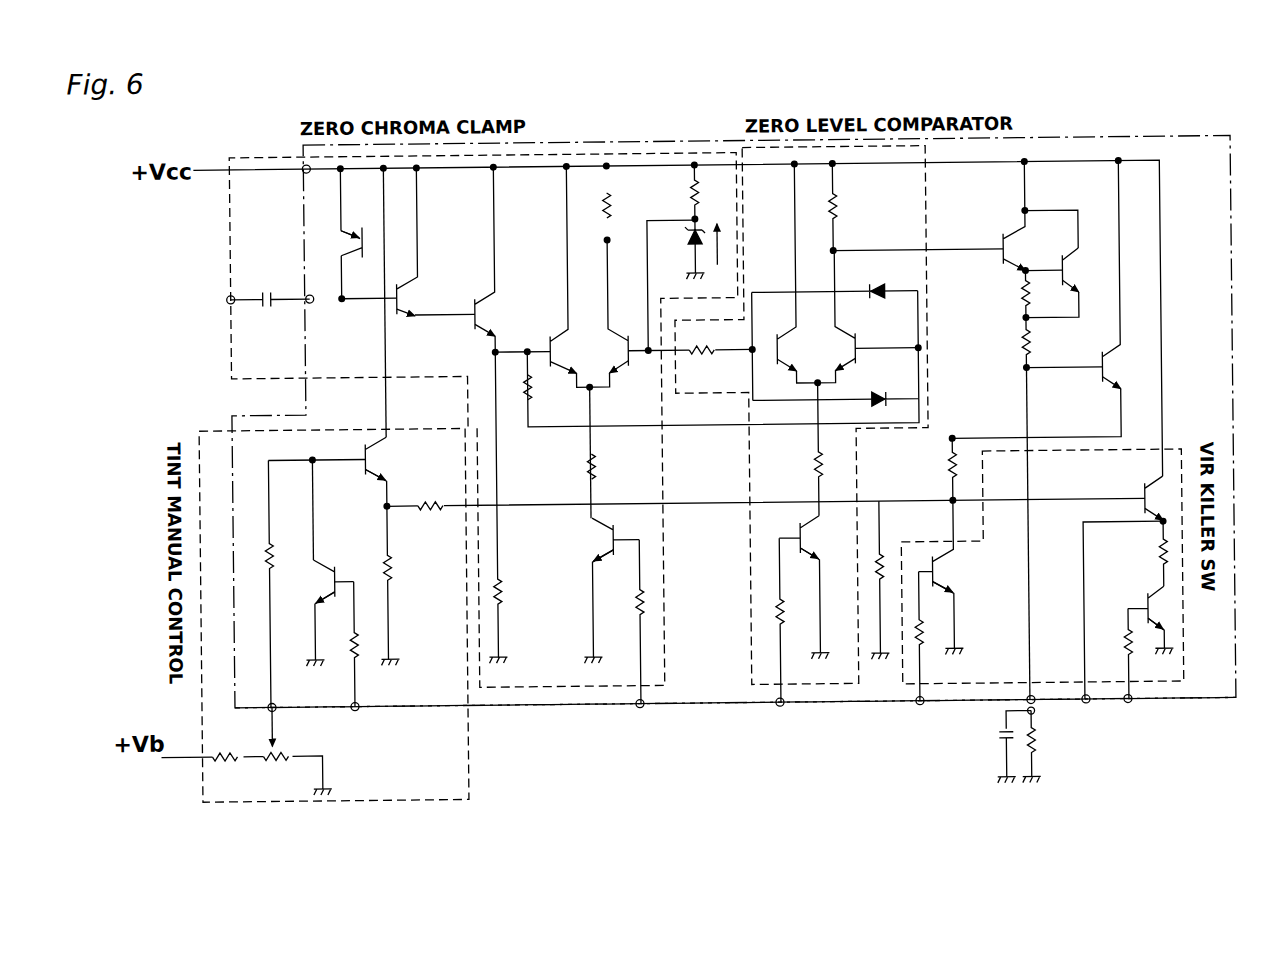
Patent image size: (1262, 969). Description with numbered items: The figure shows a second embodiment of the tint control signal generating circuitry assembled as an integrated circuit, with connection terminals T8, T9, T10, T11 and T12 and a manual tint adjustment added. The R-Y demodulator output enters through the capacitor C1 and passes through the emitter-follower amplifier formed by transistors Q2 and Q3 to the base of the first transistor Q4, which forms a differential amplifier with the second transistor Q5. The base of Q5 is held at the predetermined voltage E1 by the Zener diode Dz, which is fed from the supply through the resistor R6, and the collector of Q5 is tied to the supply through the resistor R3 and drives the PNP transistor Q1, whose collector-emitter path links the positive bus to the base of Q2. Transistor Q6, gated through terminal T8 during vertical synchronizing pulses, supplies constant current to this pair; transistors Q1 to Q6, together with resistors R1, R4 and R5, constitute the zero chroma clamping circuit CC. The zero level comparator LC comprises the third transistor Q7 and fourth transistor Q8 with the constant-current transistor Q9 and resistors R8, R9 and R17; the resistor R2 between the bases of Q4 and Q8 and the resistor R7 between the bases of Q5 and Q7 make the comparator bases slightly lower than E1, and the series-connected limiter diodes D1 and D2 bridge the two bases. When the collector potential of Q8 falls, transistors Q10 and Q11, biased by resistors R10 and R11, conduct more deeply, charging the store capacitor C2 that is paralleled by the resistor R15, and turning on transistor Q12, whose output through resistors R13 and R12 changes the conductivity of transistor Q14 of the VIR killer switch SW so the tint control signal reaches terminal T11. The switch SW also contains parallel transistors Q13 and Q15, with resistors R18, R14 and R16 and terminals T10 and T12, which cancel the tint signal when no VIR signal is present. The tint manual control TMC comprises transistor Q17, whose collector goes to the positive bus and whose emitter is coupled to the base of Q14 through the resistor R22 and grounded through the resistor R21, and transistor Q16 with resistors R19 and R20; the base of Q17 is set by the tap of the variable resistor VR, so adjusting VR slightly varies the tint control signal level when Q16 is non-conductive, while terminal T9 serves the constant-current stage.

The PNP type transistor Q1 is at (358, 242).
The transistor Q2 is at (417, 242).
The transistor Q3 is at (497, 251).
The first transistor Q4 is at (569, 269).
The second transistor Q5 is at (622, 336).
The transistor Q6 is at (602, 588).
The third transistor Q7 is at (799, 267).
The fourth transistor Q8 is at (850, 340).
The transistor Q9 is at (810, 585).
The transistor Q10 is at (1031, 216).
The transistor Q11 is at (1090, 270).
The transistor Q12 is at (1127, 274).
The transistor Q13 is at (955, 574).
The transistor Q14 is at (1152, 488).
The transistor Q15 is at (1150, 602).
The transistor Q16 is at (326, 578).
The transistor Q17 is at (395, 472).
The resistor R1 is at (515, 504).
The resistor R2 is at (544, 389).
The resistor R3 is at (625, 209).
The resistor R4 is at (588, 466).
The resistor R5 is at (645, 604).
The resistor R6 is at (692, 196).
The resistor R7 is at (708, 360).
The resistor R8 is at (814, 462).
The resistor R9 is at (840, 206).
The resistor R10 is at (1022, 300).
The resistor R11 is at (1022, 345).
The resistor R12 is at (882, 566).
The resistor R13 is at (948, 470).
The resistor R14 is at (1156, 556).
The resistor R15 is at (1034, 742).
The resistor R16 is at (1086, 653).
The resistor R17 is at (774, 618).
The resistor R18 is at (965, 636).
The resistor R19 is at (274, 548).
The resistor R20 is at (358, 634).
The resistor R21 is at (391, 566).
The resistor R22 is at (430, 508).
The variable resistor VR is at (263, 743).
The capacitor C1 is at (269, 287).
The capacitor C2 is at (987, 753).
The limiter diode D1 is at (834, 280).
The limiter diode D2 is at (835, 349).
The Zener diode Dz is at (690, 238).
The predetermined voltage E1 is at (714, 234).
The connection terminal T8 is at (637, 707).
The connection terminal T9 is at (777, 707).
The connection terminal T10 is at (916, 707).
The connection terminal T11 is at (1086, 707).
The connection terminal T12 is at (1138, 716).
The zero chroma clamping circuit CC is at (582, 141).
The zero level comparator LC is at (745, 148).
The tint manual control TMC is at (470, 770).
The VIR killer switch SW is at (1150, 688).